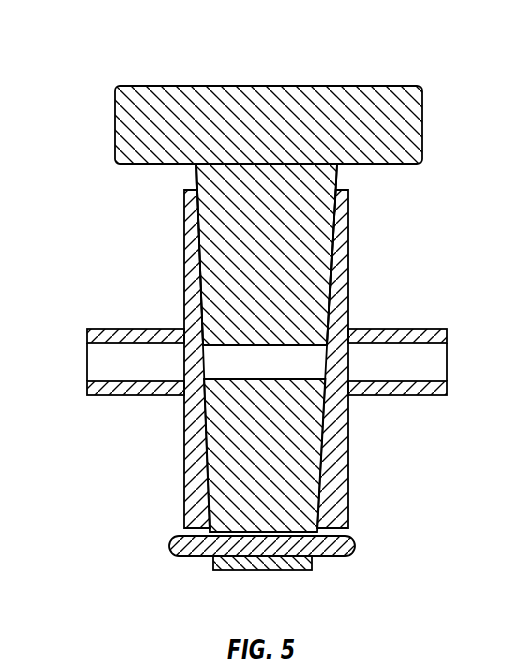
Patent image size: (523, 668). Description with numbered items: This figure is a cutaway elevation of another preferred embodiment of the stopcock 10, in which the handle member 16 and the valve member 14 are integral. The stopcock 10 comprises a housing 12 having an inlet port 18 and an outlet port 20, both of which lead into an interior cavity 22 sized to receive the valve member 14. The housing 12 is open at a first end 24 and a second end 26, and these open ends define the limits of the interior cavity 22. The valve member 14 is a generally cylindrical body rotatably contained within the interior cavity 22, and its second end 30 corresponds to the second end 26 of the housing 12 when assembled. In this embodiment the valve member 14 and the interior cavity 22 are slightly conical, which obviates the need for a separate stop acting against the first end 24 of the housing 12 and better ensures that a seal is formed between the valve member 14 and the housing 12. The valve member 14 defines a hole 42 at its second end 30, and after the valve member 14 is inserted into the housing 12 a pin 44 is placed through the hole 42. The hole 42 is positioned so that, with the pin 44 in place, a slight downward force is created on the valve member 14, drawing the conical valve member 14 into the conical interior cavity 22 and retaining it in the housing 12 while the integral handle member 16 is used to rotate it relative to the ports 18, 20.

The stopcock 10 is at (334, 53).
The housing 12 is at (349, 289).
The valve member 14 is at (306, 211).
The handle member 16 is at (426, 118).
The inlet port 18 is at (86, 363).
The outlet port 20 is at (447, 365).
The interior cavity 22 is at (327, 378).
The first end 24 is at (189, 190).
The second end 26 is at (183, 497).
The second end 30 is at (214, 567).
The hole 42 is at (212, 558).
The pin 44 is at (356, 544).